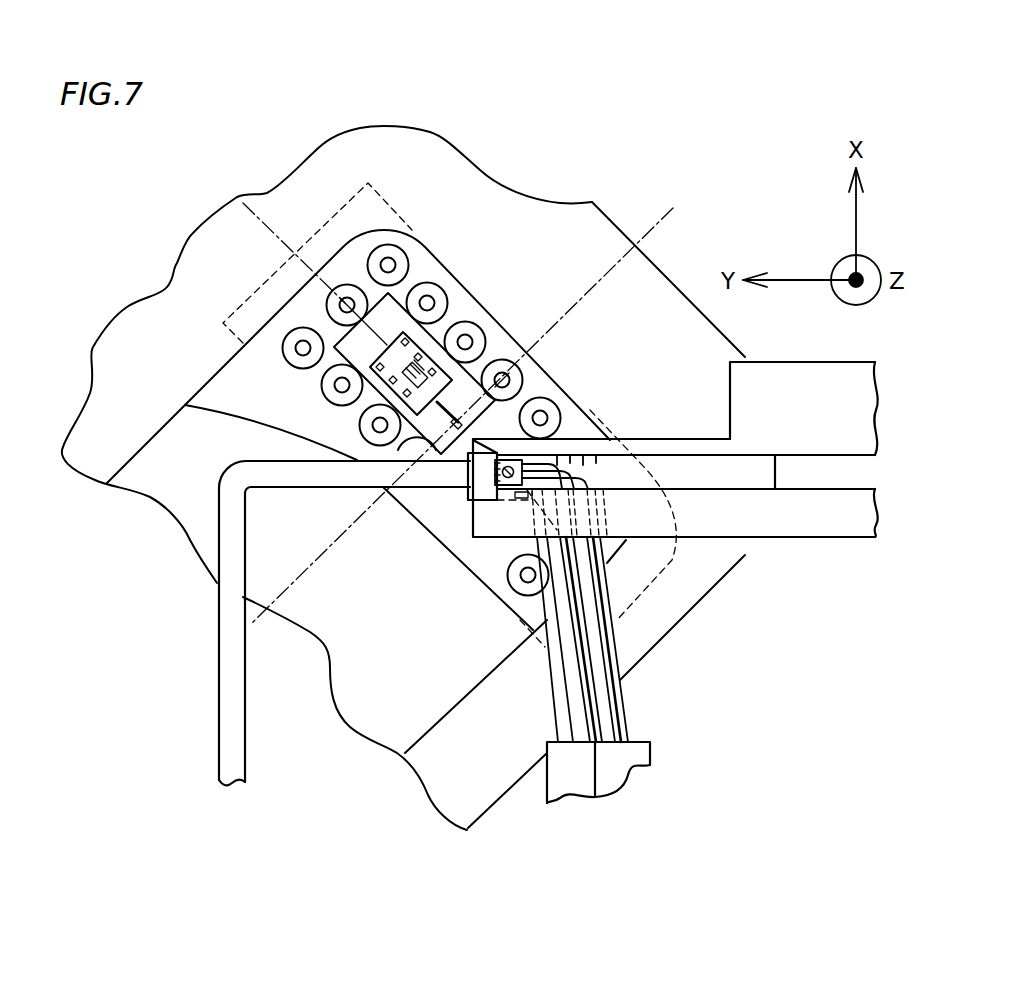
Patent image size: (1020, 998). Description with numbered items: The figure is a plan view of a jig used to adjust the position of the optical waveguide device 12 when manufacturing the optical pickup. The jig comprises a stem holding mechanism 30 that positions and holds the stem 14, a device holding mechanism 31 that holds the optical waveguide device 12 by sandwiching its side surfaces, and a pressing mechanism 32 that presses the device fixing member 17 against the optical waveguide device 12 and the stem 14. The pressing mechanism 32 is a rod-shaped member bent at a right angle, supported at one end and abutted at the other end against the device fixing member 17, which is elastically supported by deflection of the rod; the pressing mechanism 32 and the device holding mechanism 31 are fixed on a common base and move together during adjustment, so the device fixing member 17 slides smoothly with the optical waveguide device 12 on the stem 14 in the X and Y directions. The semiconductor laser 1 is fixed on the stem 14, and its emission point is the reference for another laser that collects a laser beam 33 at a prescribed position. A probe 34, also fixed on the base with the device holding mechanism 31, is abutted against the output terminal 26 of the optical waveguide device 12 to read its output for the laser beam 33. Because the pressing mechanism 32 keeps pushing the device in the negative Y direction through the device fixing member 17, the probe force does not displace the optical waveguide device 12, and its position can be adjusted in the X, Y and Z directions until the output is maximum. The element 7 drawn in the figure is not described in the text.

The semiconductor laser 1 is at (445, 395).
The semiconductor module 7 is at (397, 347).
The optical waveguide device 12 is at (480, 490).
The stem 14 is at (300, 313).
The device fixing member 17 is at (460, 497).
The output terminal 26 is at (523, 460).
The stem holding mechanism 30 is at (213, 437).
The device holding mechanism 31 is at (842, 433).
The pressing mechanism 32 is at (230, 723).
The laser beam 33 is at (508, 455).
The probe 34 is at (633, 757).